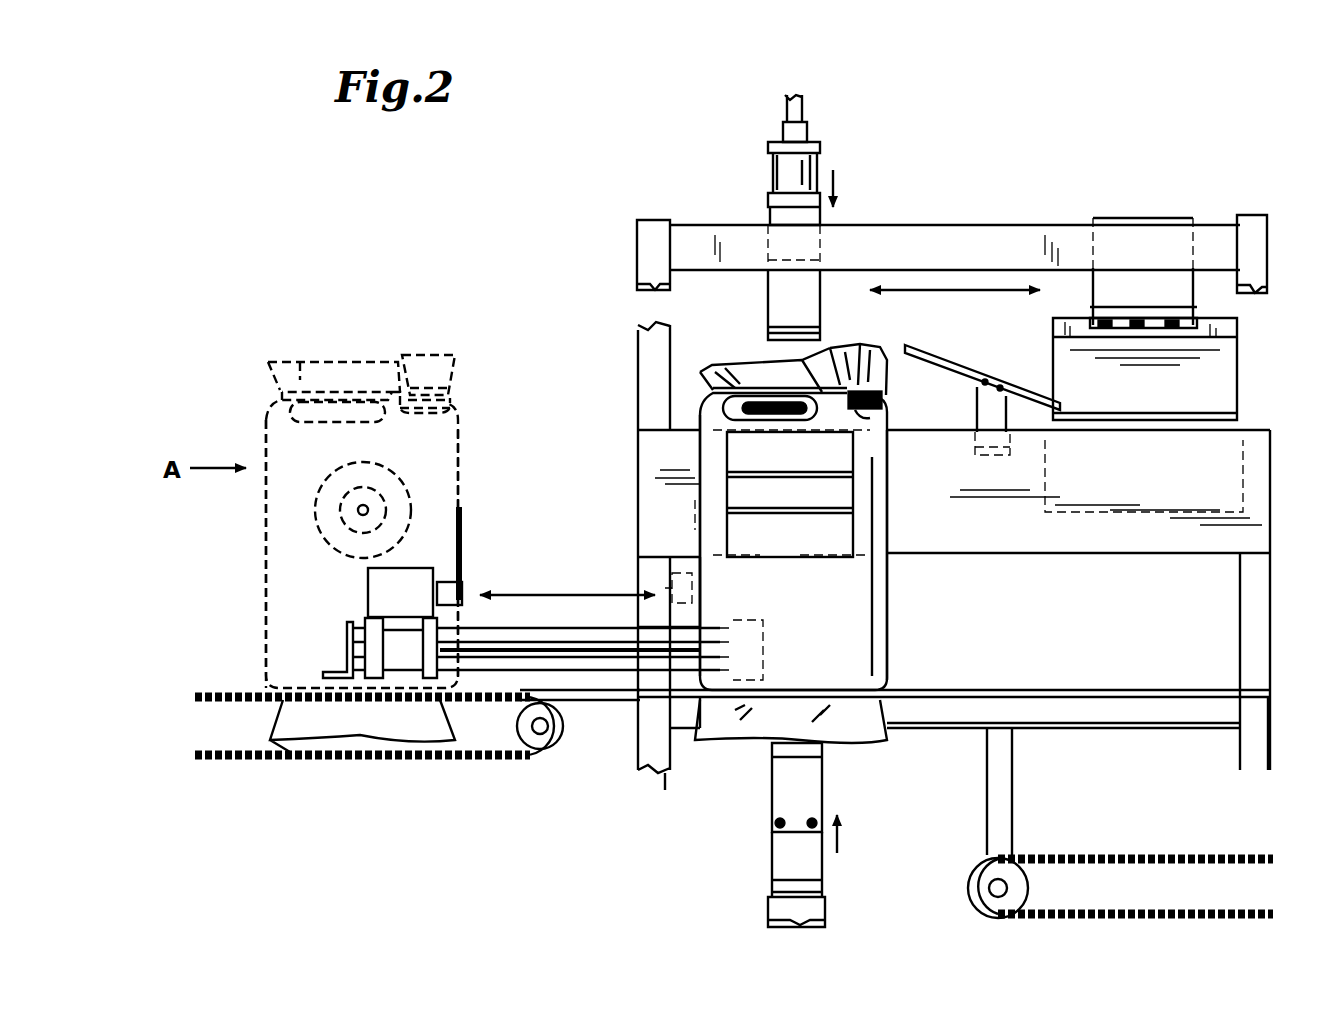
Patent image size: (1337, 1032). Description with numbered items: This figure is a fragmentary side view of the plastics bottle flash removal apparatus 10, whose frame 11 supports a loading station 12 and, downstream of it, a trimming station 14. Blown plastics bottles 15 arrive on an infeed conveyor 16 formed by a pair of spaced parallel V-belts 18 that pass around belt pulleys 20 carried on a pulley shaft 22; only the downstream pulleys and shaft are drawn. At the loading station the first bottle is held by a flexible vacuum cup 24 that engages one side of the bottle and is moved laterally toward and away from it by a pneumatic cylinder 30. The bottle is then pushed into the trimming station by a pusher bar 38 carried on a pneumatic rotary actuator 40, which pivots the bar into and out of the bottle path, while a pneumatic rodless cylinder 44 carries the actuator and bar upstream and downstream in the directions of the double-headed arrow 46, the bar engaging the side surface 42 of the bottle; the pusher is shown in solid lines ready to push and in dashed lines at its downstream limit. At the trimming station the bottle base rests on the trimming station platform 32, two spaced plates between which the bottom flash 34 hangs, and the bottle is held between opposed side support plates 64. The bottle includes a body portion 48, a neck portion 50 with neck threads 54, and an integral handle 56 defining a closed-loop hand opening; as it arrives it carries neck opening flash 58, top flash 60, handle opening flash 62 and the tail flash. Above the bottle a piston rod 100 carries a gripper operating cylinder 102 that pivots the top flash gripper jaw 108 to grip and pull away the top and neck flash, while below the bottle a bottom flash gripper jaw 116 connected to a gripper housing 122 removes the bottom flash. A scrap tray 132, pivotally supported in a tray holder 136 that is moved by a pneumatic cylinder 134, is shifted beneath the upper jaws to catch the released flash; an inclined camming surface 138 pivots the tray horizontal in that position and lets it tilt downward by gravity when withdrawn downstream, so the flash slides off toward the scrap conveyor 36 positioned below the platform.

The plastics bottle flash removal apparatus 10 is at (952, 92).
The frame 11 is at (668, 780).
The loading station 12 is at (228, 313).
The trimming station 14 is at (628, 212).
The plastics bottle 15 is at (272, 506).
The infeed conveyor 16 is at (155, 728).
The V-belts 18 is at (238, 758).
The belt pulleys 20 is at (538, 745).
The pulley shaft 22 is at (548, 728).
The vacuum cup 24 is at (405, 500).
The pneumatic cylinder 30 is at (352, 522).
The trimming station platform 32 is at (588, 702).
The bottom flash 34 is at (325, 728).
The scrap conveyor 36 is at (1080, 858).
The pusher bar 38 is at (464, 538).
The pneumatic rotary actuator 40 is at (368, 588).
The side surface 42 is at (266, 645).
The pneumatic rodless cylinder 44 is at (540, 640).
The direction of movement 46 is at (566, 596).
The body portion 48 is at (455, 458).
The neck portion 50 is at (448, 410).
The neck threads 54 is at (452, 396).
The handle 56 is at (342, 392).
The neck opening flash 58 is at (440, 355).
The top flash 60 is at (313, 365).
The handle opening flash 62 is at (295, 410).
The side support plates 64 is at (803, 541).
The piston rod 100 is at (800, 110).
The gripper operating cylinder 102 is at (775, 178).
The top flash gripper jaw 108 is at (775, 290).
The bottom flash gripper jaw 116 is at (815, 775).
The gripper housing 122 is at (775, 862).
The scrap tray 132 is at (1240, 360).
The pneumatic cylinder 134 is at (968, 232).
The tray holder 136 is at (1195, 300).
The inclined camming surface 138 is at (960, 366).